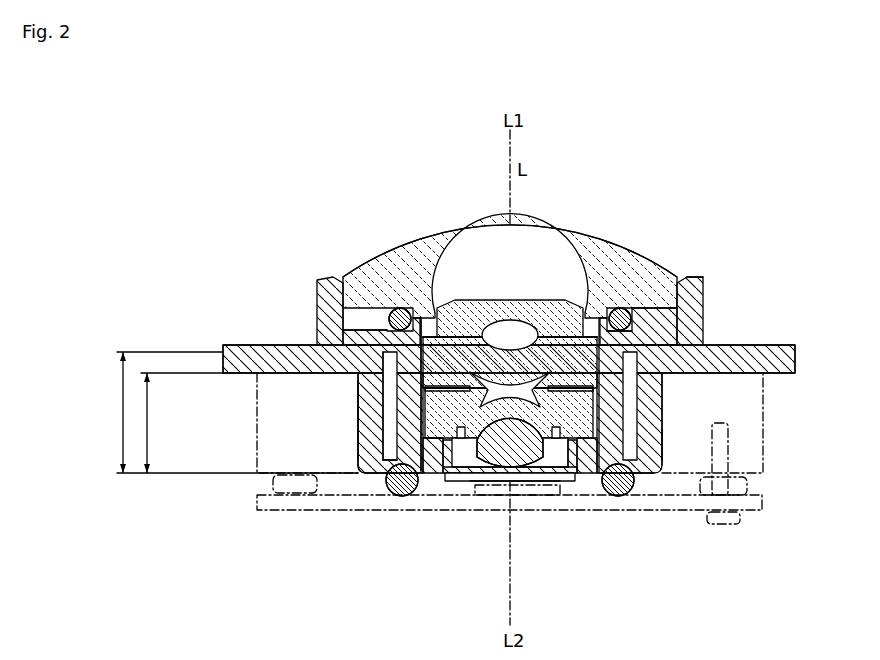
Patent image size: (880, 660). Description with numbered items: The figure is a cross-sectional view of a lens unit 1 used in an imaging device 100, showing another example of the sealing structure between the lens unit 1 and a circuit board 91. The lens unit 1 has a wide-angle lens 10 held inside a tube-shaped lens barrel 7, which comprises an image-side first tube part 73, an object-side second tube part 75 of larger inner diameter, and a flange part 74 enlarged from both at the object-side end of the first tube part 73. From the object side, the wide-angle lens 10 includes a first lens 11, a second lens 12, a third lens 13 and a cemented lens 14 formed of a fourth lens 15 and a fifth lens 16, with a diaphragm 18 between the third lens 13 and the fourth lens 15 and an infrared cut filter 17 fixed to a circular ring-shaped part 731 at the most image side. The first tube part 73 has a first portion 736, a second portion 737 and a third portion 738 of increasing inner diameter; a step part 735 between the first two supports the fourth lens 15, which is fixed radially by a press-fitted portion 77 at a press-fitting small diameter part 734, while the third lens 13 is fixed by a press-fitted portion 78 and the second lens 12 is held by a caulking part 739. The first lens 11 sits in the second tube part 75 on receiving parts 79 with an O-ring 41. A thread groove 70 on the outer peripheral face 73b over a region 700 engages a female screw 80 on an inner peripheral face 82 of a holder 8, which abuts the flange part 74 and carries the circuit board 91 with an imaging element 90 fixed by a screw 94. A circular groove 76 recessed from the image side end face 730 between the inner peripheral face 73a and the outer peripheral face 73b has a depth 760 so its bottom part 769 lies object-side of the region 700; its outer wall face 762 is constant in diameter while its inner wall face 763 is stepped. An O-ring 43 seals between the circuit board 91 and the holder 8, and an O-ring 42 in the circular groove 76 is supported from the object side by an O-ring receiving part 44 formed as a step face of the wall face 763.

The lens unit 1 is at (748, 264).
The lens barrel 7 is at (703, 320).
The holder 8 is at (765, 413).
The wide-angle lens 10 is at (490, 212).
The first lens 11 is at (530, 238).
The second lens 12 is at (548, 352).
The third lens 13 is at (560, 398).
The cemented lens 14 is at (520, 545).
The fourth lens 15 is at (545, 470).
The fifth lens 16 is at (508, 470).
The infrared cut filter 17 is at (470, 482).
The diaphragm 18 is at (463, 345).
The O-ring 41 is at (620, 313).
The O-ring 42 is at (400, 497).
The O-ring 43 is at (272, 486).
The O-ring receiving part 44 is at (392, 493).
The thread groove 70 is at (663, 427).
The first tube part 73 is at (657, 415).
The inner peripheral face 73a is at (428, 330).
The outer peripheral face 73b is at (358, 445).
The flange part 74 is at (752, 355).
The second tube part 75 is at (690, 288).
The circular groove 76 is at (352, 475).
The press-fitted portion 77 is at (662, 478).
The press-fitted portion 78 is at (605, 382).
The receiving part 79 is at (697, 300).
The female screw 80 is at (663, 445).
The inner peripheral face 82 is at (728, 455).
The imaging element 90 is at (492, 495).
The circuit board 91 is at (504, 502).
The screw 94 is at (722, 524).
The imaging device 100 is at (730, 187).
The region 700 is at (182, 423).
The image side end face 730 is at (443, 475).
The circular ring-shaped part 731 is at (450, 475).
The press-fitting small diameter part 734 is at (555, 519).
The step part 735 is at (580, 475).
The first portion 736 is at (430, 478).
The second portion 737 is at (372, 477).
The third portion 738 is at (395, 308).
The caulking part 739 is at (627, 309).
The depth 760 is at (220, 412).
The wall face 762 is at (383, 397).
The wall face 763 is at (397, 410).
The bottom part 769 is at (392, 355).